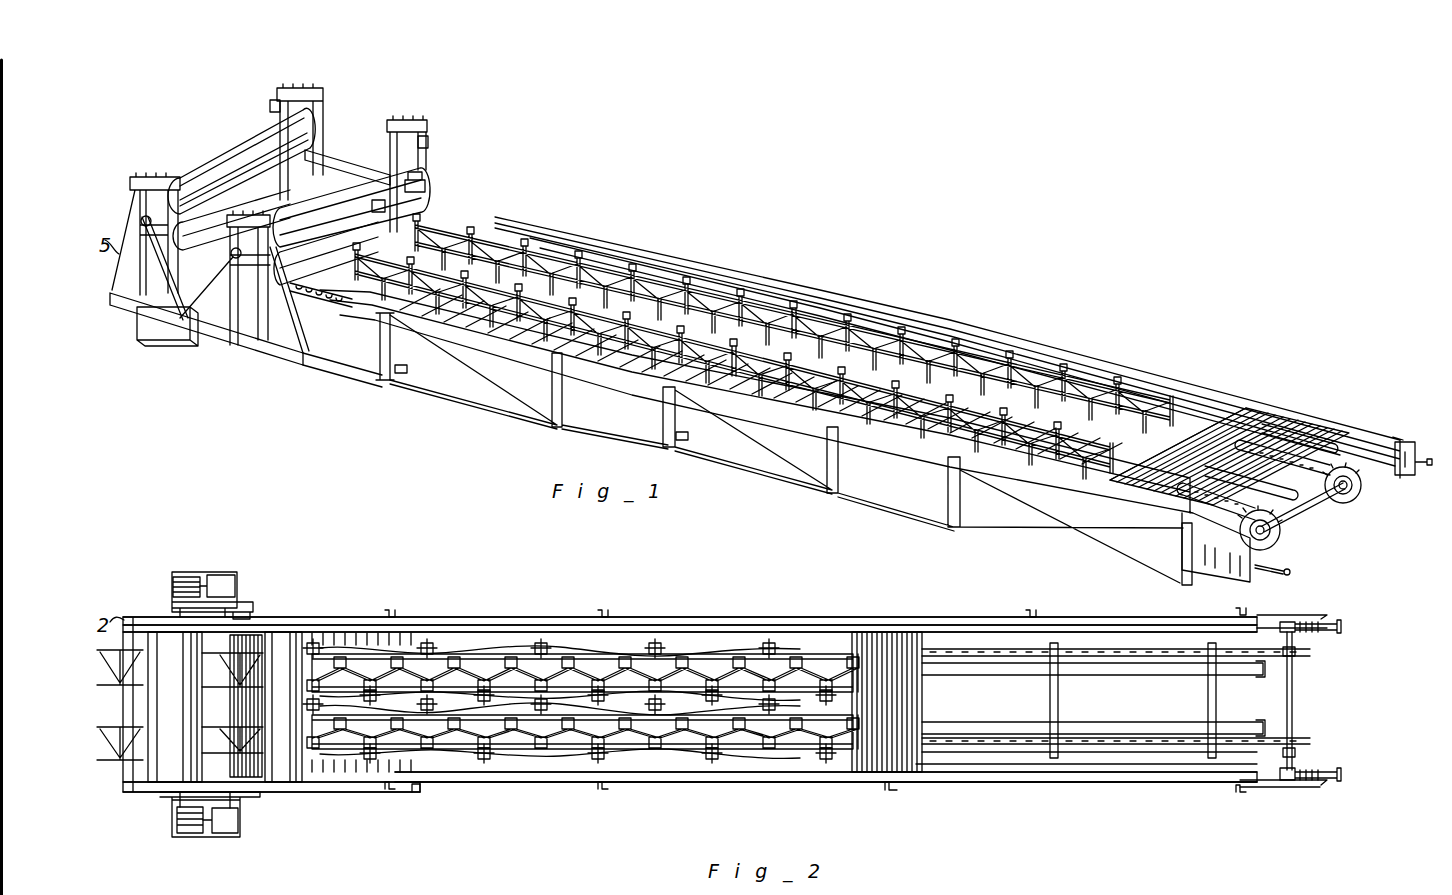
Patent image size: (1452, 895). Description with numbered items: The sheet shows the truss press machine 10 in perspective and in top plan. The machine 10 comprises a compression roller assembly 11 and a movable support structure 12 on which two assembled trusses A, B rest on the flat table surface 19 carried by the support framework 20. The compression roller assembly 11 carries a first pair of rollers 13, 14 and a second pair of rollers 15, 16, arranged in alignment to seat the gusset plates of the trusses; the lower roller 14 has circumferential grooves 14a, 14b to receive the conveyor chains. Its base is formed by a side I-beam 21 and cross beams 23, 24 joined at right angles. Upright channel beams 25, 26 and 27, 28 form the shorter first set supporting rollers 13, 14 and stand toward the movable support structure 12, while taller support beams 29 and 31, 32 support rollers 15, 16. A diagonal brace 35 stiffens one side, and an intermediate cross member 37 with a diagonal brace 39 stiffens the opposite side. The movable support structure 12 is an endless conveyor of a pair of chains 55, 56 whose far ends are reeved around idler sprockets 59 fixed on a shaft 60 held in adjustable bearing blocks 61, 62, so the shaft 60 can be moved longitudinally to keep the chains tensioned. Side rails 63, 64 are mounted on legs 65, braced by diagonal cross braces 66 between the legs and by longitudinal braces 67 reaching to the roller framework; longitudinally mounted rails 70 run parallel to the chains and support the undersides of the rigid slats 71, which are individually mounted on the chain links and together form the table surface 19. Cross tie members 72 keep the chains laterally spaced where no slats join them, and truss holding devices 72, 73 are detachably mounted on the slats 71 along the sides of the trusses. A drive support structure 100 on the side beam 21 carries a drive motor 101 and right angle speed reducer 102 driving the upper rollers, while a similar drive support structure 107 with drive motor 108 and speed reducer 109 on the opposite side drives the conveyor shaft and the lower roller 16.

In FIG. 1, the truss press machine 10 is at (866, 247).
In FIG. 2, the truss press machine 10 is at (562, 590).
In FIG. 1, the compression roller assembly 11 is at (188, 356).
In FIG. 2, the compression roller assembly 11 is at (318, 830).
In FIG. 1, the movable support structure 12 is at (760, 470).
In FIG. 2, the movable support structure 12 is at (658, 796).
In FIG. 1, the upper roller of first pair 13 is at (424, 150).
In FIG. 2, the upper roller of first pair 13 is at (287, 647).
In FIG. 1, the lower roller of first pair 14 is at (400, 190).
In FIG. 1, the circumferential groove 14a is at (378, 205).
In FIG. 1, the circumferential groove 14b is at (297, 300).
In FIG. 1, the upper roller of second pair 15 is at (263, 137).
In FIG. 2, the upper roller of second pair 15 is at (165, 645).
In FIG. 1, the lower roller of second pair 16 is at (253, 203).
In FIG. 1, the table surface 19 is at (1007, 350).
In FIG. 2, the table surface 19 is at (710, 642).
In FIG. 1, the support framework 20 is at (873, 480).
In FIG. 2, the support framework 20 is at (907, 790).
In FIG. 1, the side I-beam 21 is at (277, 357).
In FIG. 1, the cross beam 23 is at (355, 365).
In FIG. 2, the cross beam 24 is at (127, 780).
In FIG. 1, the channel support beam 25 is at (267, 327).
In FIG. 1, the channel support beam 26 is at (237, 313).
In FIG. 1, the channel support beam 27 is at (424, 148).
In FIG. 1, the channel support beam 28 is at (390, 123).
In FIG. 1, the support beam 29 is at (183, 187).
In FIG. 1, the support beam 31 is at (323, 115).
In FIG. 1, the support beam 32 is at (278, 105).
In FIG. 1, the diagonal brace 35 is at (301, 335).
In FIG. 1, the intermediate cross member 37 is at (367, 130).
In FIG. 1, the diagonal brace 39 is at (425, 185).
In FIG. 1, the endless chain 55 is at (1270, 540).
In FIG. 2, the endless chain 55 is at (1158, 749).
In FIG. 1, the endless chain 56 is at (1360, 495).
In FIG. 2, the endless chain 56 is at (1140, 660).
In FIG. 1, the idler sprocket 59 is at (1280, 512).
In FIG. 2, the idler sprocket 59 is at (1300, 660).
In FIG. 1, the shaft 60 is at (1317, 500).
In FIG. 2, the shaft 60 is at (1295, 702).
In FIG. 1, the adjustable bearing block 61 is at (1393, 445).
In FIG. 2, the adjustable bearing block 61 is at (1305, 625).
In FIG. 1, the adjustable bearing block 62 is at (1273, 567).
In FIG. 2, the adjustable bearing block 62 is at (1310, 770).
In FIG. 1, the side rail 63 is at (633, 382).
In FIG. 2, the side rail 63 is at (1087, 777).
In FIG. 1, the side rail 64 is at (690, 252).
In FIG. 2, the side rail 64 is at (917, 623).
In FIG. 1, the leg 65 is at (400, 368).
In FIG. 2, the leg 65 is at (1030, 612).
In FIG. 1, the diagonal cross brace 66 is at (515, 390).
In FIG. 1, the longitudinal brace 67 is at (378, 379).
In FIG. 2, the rail 70 is at (1185, 723).
In FIG. 1, the slat 71 is at (1200, 423).
In FIG. 2, the slat 71 is at (920, 775).
In FIG. 2, the stop device / cross tie member 72 is at (498, 655).
In FIG. 2, the clamping device 73 is at (586, 600).
In FIG. 2, the drive support structure 100 is at (207, 838).
In FIG. 2, the drive motor 101 is at (180, 818).
In FIG. 2, the right angle speed reducer 102 is at (230, 825).
In FIG. 2, the drive support structure 107 is at (242, 600).
In FIG. 2, the drive motor 108 is at (188, 578).
In FIG. 2, the speed reducer 109 is at (217, 583).
In FIG. 1, the truss A is at (940, 325).
In FIG. 2, the truss A is at (790, 650).
In FIG. 1, the truss B is at (917, 452).
In FIG. 2, the truss B is at (762, 752).